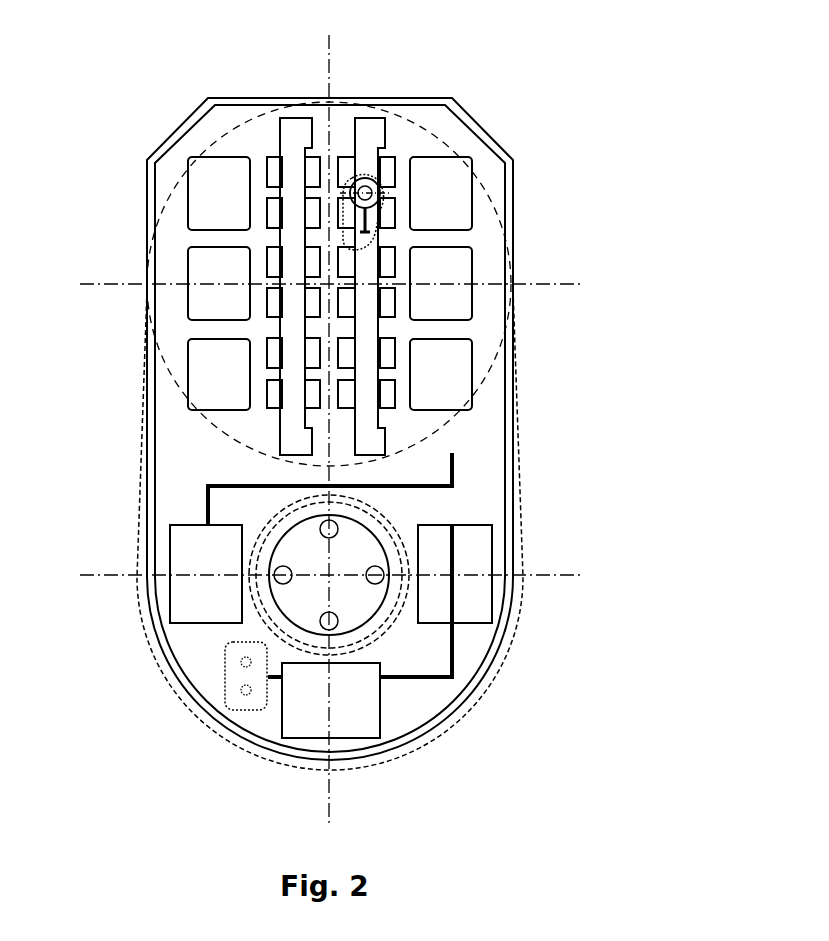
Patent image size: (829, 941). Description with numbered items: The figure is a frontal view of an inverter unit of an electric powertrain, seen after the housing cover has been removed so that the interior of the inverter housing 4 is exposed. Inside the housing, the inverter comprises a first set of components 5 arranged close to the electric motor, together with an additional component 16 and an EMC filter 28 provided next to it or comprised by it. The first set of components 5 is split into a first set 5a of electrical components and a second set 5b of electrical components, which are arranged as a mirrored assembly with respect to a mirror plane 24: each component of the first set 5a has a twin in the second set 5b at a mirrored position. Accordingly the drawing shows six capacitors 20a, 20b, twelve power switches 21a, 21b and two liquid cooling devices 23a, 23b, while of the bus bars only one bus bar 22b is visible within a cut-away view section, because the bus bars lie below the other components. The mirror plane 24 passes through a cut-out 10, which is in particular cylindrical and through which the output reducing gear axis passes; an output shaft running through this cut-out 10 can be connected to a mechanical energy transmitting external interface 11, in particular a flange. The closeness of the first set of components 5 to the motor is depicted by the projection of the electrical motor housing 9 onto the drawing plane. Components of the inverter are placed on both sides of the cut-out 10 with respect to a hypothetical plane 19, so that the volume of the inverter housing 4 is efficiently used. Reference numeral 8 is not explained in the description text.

The inverter housing 4 is at (265, 84).
The mirror plane 24 is at (337, 40).
The first set of components 5 is at (344, 244).
The first set of electrical components 5a is at (180, 251).
The second set of electrical components 5b is at (493, 244).
The capacitor 20a is at (217, 173).
The capacitor 20b is at (445, 178).
The power switch 21a is at (268, 216).
The power switch 21b is at (393, 253).
The bus bar 22b is at (373, 180).
The liquid cooling device 23a is at (292, 329).
The liquid cooling device 23b is at (365, 304).
The electrical motor housing 9 is at (205, 420).
The hypothetical plane 19 is at (555, 575).
The cut-out 10 is at (306, 648).
The mechanical energy transmitting external interface 11 is at (292, 597).
The sensor 8 is at (237, 667).
The additional component 16 is at (298, 707).
The EMC filter 28 is at (303, 728).